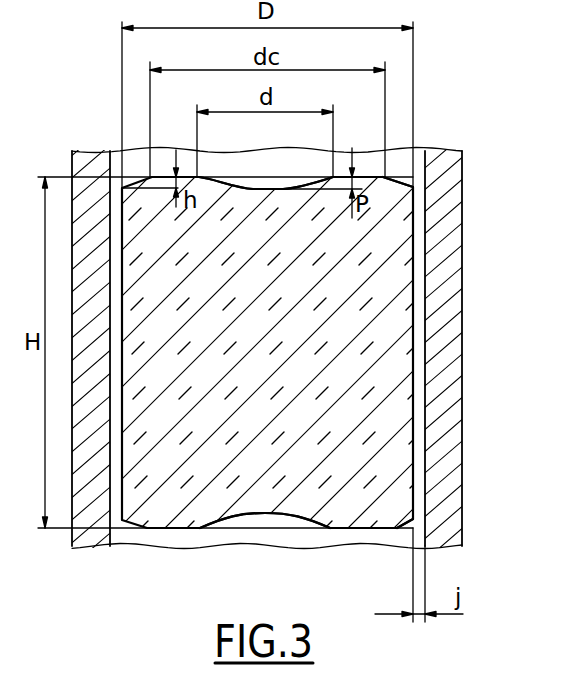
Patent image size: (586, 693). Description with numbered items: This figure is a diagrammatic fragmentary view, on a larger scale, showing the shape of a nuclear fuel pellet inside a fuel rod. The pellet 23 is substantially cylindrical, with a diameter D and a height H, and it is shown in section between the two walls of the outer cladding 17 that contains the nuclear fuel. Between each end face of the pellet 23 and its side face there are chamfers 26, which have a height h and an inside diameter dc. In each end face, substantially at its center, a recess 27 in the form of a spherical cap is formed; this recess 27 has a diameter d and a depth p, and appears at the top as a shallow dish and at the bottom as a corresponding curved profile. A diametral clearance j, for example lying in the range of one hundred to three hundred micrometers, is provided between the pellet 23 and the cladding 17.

The outer cladding 17 is at (443, 262).
The pellet 23 is at (403, 375).
The chamfers 26 is at (406, 180).
The recess 27 is at (237, 191).